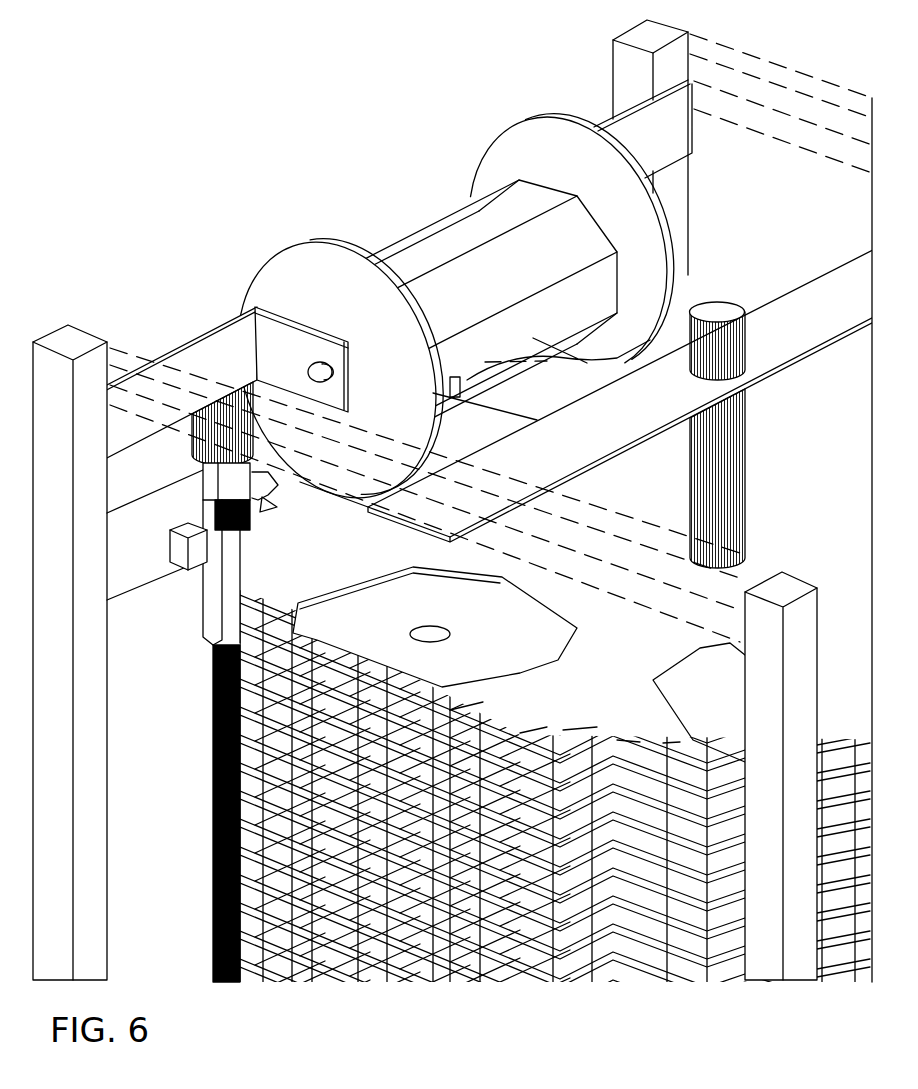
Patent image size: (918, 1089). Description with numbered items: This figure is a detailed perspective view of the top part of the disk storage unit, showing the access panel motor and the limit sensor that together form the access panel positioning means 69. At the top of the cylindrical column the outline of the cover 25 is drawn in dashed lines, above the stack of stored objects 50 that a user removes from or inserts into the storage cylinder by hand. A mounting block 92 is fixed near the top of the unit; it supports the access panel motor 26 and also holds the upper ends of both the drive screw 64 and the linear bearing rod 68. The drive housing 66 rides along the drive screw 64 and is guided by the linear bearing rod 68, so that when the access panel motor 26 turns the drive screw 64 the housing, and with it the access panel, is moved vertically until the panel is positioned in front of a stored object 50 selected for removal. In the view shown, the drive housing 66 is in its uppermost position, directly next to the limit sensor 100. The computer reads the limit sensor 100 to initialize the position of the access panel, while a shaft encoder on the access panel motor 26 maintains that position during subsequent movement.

The access panel positioning means 69 is at (188, 258).
The access panel motor 26 is at (192, 454).
The mounting block 92 is at (200, 490).
The limit sensor 100 is at (170, 548).
The linear bearing rod 68 is at (275, 507).
The drive housing 66 is at (210, 618).
The drive screw 64 is at (213, 660).
The stored object 50 is at (498, 630).
The cover 25 is at (506, 714).